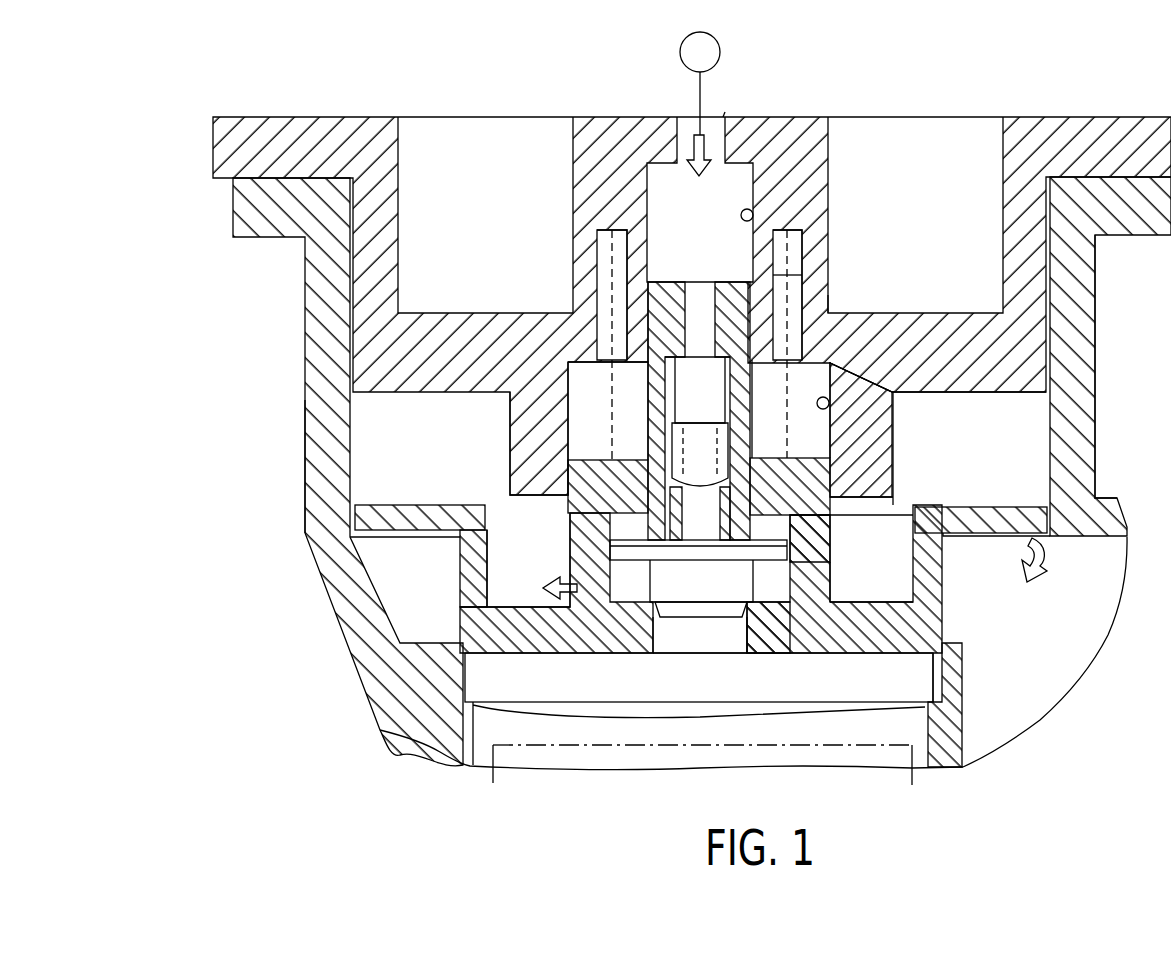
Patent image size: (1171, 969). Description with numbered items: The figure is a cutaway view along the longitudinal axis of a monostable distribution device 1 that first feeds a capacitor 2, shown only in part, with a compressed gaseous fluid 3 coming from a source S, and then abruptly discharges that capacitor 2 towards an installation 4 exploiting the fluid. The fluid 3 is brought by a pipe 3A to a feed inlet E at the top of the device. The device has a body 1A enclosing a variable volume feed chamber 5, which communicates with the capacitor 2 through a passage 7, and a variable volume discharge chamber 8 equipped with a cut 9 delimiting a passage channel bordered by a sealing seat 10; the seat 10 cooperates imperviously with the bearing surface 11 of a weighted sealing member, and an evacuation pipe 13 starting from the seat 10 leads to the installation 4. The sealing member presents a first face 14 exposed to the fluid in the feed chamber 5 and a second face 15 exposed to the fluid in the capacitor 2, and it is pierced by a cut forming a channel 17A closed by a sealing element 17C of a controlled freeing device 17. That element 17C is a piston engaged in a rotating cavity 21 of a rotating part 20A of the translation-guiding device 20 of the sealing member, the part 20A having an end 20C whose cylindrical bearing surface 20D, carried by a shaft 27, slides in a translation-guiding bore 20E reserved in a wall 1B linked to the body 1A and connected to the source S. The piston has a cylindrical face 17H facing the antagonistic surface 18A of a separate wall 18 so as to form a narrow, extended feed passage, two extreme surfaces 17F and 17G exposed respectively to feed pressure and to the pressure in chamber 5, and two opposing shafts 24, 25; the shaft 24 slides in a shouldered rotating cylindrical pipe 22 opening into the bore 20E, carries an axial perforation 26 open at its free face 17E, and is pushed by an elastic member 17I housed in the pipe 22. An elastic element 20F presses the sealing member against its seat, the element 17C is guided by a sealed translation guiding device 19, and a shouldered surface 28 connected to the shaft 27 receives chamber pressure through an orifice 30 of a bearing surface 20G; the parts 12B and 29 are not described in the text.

The monostable distribution device 1 is at (258, 346).
The body 1A is at (323, 395).
The wall 1B is at (520, 438).
The capacitor 2 is at (1037, 645).
The compressed gaseous fluid 3 is at (703, 180).
The pipe 3A is at (698, 95).
The installation 4 is at (690, 741).
The variable volume feed chamber 5 is at (325, 428).
The passage 7 is at (1040, 495).
The variable volume discharge chamber 8 is at (630, 695).
The cut 9 is at (688, 716).
The sealing seat 10 is at (925, 680).
The bearing surface 11 is at (937, 645).
The holder base portion 12B is at (767, 620).
The evacuation pipe 13 is at (963, 763).
The first face 14 is at (381, 505).
The second face 15 is at (416, 528).
The controlled freeing device 17 is at (880, 443).
The channel 17A is at (738, 653).
The sealing element 17C is at (618, 607).
The free face 17E is at (703, 432).
The surface 17F is at (845, 475).
The surface 17G is at (770, 563).
The cylindrical face 17H is at (578, 552).
The elastic member 17I is at (752, 364).
The wall 18 is at (560, 484).
The antagonistic surface 18A is at (597, 522).
The translation guiding device 19 is at (740, 457).
The translation-guiding device 20 is at (537, 490).
The rotating part 20A is at (832, 519).
The end 20C is at (770, 280).
The cylindrical bearing surface 20D is at (880, 440).
The translation-guiding bore 20E is at (753, 215).
The elastic element 20F is at (830, 300).
The bearing surface 20G is at (829, 400).
The rotating cavity 21 is at (745, 535).
The rotating cylindrical pipe 22 is at (707, 360).
The cylindrical shaft 24 is at (670, 453).
The cylindrical shaft 25 is at (677, 617).
The perforation 26 is at (700, 560).
The shaft 27 is at (667, 300).
The shouldered surface 28 is at (593, 460).
The flange 29 is at (830, 517).
The orifice 30 is at (812, 578).
The feed inlet E is at (725, 112).
The source S is at (700, 52).